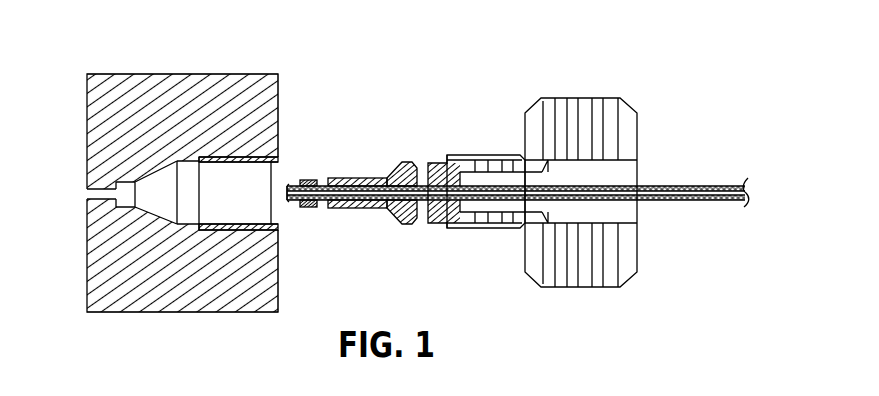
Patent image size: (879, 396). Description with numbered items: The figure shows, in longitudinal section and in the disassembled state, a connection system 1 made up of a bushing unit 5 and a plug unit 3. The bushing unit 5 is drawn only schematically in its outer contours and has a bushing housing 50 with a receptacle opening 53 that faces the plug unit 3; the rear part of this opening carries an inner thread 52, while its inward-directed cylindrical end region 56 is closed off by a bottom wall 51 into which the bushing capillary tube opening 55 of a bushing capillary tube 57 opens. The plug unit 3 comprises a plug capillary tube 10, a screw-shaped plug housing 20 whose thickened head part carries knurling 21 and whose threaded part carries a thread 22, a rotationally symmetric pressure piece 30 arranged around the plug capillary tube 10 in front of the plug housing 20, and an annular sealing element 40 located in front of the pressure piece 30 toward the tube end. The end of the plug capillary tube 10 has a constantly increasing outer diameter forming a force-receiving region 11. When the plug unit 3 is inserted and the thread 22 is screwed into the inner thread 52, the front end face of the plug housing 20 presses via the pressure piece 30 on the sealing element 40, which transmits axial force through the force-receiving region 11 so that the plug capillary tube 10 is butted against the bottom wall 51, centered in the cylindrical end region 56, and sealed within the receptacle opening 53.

The connection system 1 is at (387, 76).
The plug unit 3 is at (456, 260).
The bushing unit 5 is at (212, 60).
The plug capillary tube 10 is at (704, 184).
The force-receiving region 11 is at (291, 183).
The plug housing 20 is at (612, 132).
The knurling 21 is at (578, 98).
The thread 22 is at (448, 184).
The pressure piece 30 is at (366, 182).
The sealing element 40 is at (311, 180).
The bushing housing 50 is at (270, 123).
The bottom wall 51 is at (116, 182).
The inner thread 52 is at (233, 226).
The receptacle opening 53 is at (259, 203).
The bushing capillary tube opening 55 is at (117, 196).
The cylindrical end region 56 is at (124, 182).
The bushing capillary tube 57 is at (87, 211).